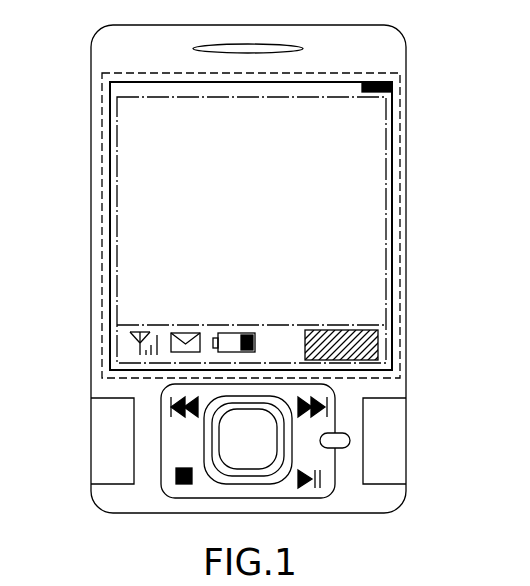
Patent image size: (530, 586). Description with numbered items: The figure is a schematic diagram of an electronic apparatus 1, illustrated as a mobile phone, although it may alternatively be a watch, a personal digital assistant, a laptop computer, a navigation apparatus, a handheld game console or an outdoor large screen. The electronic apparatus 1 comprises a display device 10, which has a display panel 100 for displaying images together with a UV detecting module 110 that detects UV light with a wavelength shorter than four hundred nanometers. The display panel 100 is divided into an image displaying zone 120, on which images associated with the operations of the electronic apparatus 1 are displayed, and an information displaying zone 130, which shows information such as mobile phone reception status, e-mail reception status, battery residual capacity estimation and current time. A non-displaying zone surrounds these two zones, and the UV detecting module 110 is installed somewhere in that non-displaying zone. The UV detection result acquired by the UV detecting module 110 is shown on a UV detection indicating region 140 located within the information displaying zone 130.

The electronic apparatus 1 is at (406, 58).
The display device 10 is at (102, 105).
The display panel 100 is at (400, 121).
The UV detecting module 110 is at (392, 85).
The image displaying zone 120 is at (117, 222).
The information displaying zone 130 is at (117, 346).
The UV detection indicating region 140 is at (376, 345).